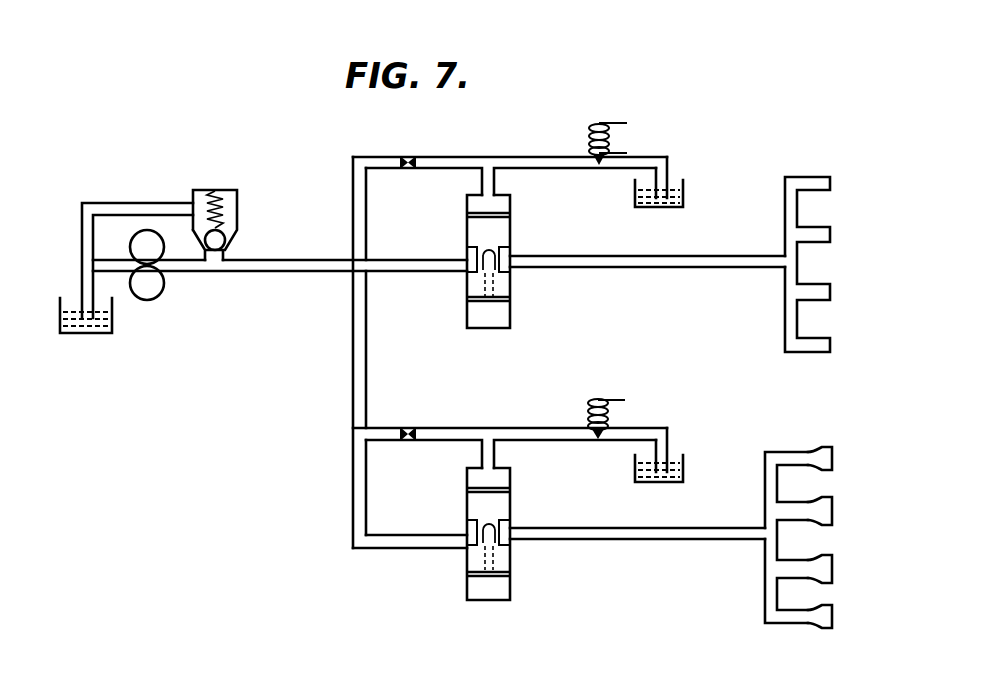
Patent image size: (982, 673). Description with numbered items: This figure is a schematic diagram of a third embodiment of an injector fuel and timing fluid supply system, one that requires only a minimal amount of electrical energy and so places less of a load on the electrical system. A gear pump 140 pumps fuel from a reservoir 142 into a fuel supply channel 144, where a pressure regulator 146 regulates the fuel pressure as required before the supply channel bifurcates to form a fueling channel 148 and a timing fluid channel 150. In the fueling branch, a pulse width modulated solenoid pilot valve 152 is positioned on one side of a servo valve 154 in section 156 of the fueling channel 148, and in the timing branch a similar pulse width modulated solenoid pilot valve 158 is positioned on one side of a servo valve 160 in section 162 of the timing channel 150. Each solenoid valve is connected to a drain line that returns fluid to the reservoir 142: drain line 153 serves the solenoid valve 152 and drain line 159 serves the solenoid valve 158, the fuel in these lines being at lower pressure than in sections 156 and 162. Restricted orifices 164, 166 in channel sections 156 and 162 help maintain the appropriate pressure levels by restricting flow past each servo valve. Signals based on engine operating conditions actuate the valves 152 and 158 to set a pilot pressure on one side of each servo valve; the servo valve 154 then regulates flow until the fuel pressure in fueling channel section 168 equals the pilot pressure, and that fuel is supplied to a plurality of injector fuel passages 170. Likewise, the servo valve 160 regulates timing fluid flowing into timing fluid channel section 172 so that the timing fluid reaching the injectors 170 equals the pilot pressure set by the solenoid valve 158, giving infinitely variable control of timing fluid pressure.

The gear pump 140 is at (159, 291).
The reservoir 142 is at (111, 329).
The fuel supply channel 144 is at (315, 273).
The pressure regulator 146 is at (224, 190).
The fueling channel 148 is at (347, 488).
The timing fluid channel 150 is at (410, 278).
The pulse width modulated solenoid pilot valve 152 is at (620, 412).
The drain line 153 is at (665, 430).
The servo valve 154 is at (507, 516).
The section of the fueling channel 156 is at (472, 428).
The pulse width modulated solenoid pilot valve 158 is at (622, 135).
The drain line 159 is at (667, 161).
The servo valve 160 is at (509, 242).
The section of the timing channel 162 is at (473, 157).
The restricted orifice 164 is at (407, 427).
The restricted orifice 166 is at (409, 155).
The fueling channel section 168 is at (633, 540).
The injector fuel passages 170 is at (799, 176).
The timing fluid channel section 172 is at (654, 264).